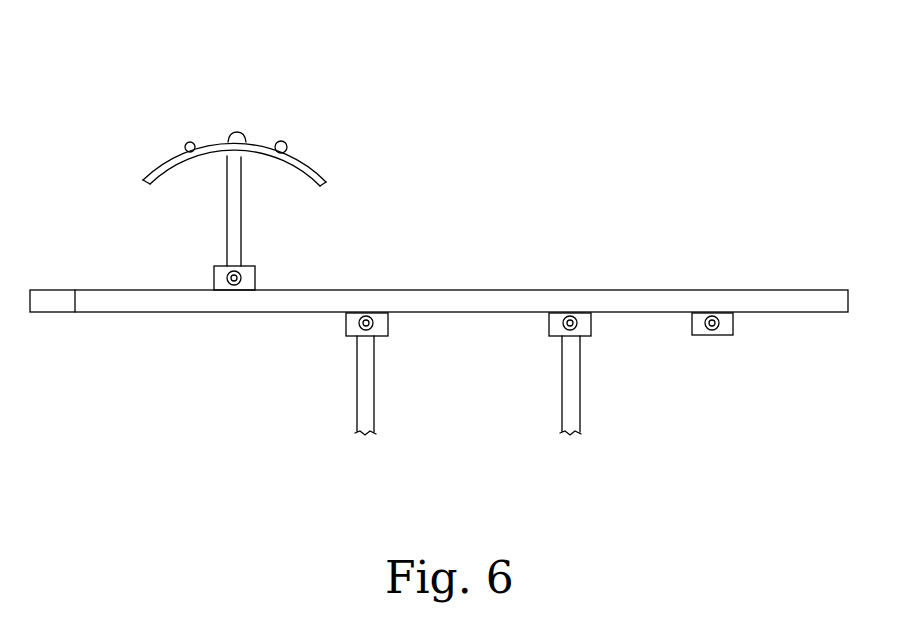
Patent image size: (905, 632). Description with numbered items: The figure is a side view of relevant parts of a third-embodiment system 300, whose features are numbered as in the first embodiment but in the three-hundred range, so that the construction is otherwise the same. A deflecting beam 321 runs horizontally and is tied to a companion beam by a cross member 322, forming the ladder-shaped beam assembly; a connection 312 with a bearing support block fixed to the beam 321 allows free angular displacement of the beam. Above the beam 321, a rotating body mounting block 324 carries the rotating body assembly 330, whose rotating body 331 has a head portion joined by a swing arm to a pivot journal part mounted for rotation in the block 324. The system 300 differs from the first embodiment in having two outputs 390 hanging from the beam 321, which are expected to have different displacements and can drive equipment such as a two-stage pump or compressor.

The system 300 is at (603, 79).
The connection 312 is at (742, 348).
The beam 321 is at (233, 312).
The cross member 322 is at (53, 312).
The rotating body mounting block 324 is at (257, 273).
The rotating body assembly 330 is at (213, 178).
The rotating body 331 is at (222, 140).
The output 390 is at (388, 408).